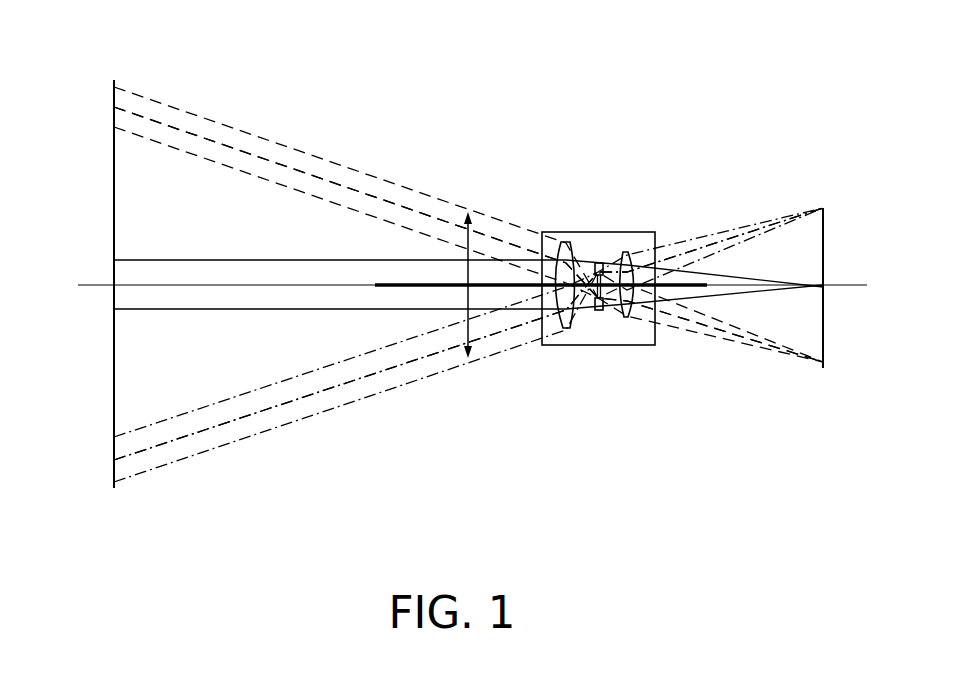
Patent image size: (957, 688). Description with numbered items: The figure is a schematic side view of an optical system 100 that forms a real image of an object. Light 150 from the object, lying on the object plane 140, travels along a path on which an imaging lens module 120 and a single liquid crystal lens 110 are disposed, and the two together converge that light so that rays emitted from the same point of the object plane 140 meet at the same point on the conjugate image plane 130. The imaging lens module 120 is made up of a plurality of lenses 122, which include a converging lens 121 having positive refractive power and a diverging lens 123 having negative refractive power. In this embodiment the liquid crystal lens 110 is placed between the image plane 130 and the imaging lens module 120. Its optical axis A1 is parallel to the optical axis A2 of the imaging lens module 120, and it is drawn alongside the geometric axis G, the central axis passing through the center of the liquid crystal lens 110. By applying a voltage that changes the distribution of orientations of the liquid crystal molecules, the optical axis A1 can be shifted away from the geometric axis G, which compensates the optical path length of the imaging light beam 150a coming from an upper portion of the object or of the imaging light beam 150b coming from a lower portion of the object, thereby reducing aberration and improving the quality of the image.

The optical system 100 is at (823, 522).
The liquid crystal lens 110 is at (472, 323).
The imaging lens module 120 is at (601, 232).
The converging lens 121 is at (567, 333).
The lenses 122 is at (630, 322).
The diverging lens 123 is at (600, 313).
The image plane 130 is at (114, 153).
The object plane 140 is at (823, 255).
The light 150 is at (468, 283).
The imaging light beam of an upper portion of the object 150a is at (697, 237).
The imaging light beam of a lower portion of the object 150b is at (738, 343).
The optical axis of the liquid crystal lens A1 is at (410, 283).
The optical axis of the imaging lens module A2 is at (508, 283).
The geometric axis G is at (222, 287).